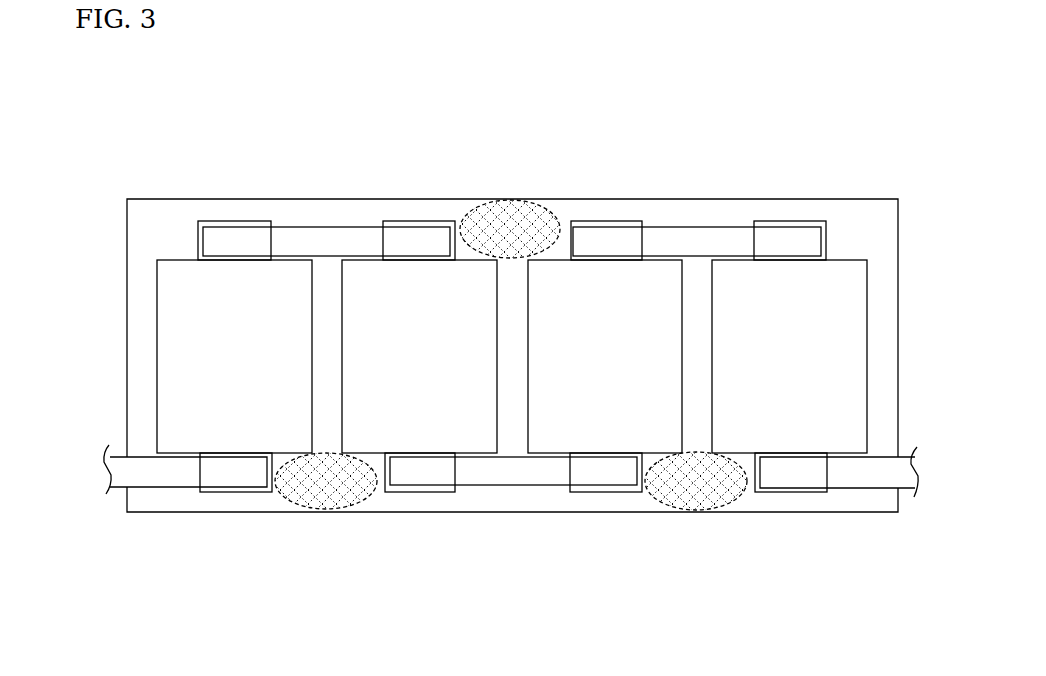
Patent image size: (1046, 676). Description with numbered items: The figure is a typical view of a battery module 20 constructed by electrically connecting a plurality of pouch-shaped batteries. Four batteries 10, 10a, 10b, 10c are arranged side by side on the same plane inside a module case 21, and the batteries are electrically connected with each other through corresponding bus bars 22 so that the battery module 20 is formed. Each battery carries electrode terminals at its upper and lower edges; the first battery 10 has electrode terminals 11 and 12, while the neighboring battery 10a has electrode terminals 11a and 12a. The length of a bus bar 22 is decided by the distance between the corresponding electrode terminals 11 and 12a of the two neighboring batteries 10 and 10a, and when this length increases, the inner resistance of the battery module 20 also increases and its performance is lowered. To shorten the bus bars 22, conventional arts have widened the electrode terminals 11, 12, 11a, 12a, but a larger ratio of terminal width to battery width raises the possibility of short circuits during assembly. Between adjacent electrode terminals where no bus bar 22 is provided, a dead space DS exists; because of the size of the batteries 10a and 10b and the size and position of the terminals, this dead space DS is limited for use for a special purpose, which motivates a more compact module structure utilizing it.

The battery module 20 is at (107, 106).
The module case (housing) 21 is at (762, 198).
The battery 10 is at (234, 356).
The battery 10a is at (419, 356).
The battery 10b is at (605, 356).
The battery 10c is at (789, 356).
The electrode terminal 11 is at (224, 221).
The electrode terminal 11a is at (420, 492).
The electrode terminal 12 is at (236, 492).
The electrode terminal 12a is at (398, 221).
The bus bar 22 is at (318, 227).
The dead space DS is at (511, 207).